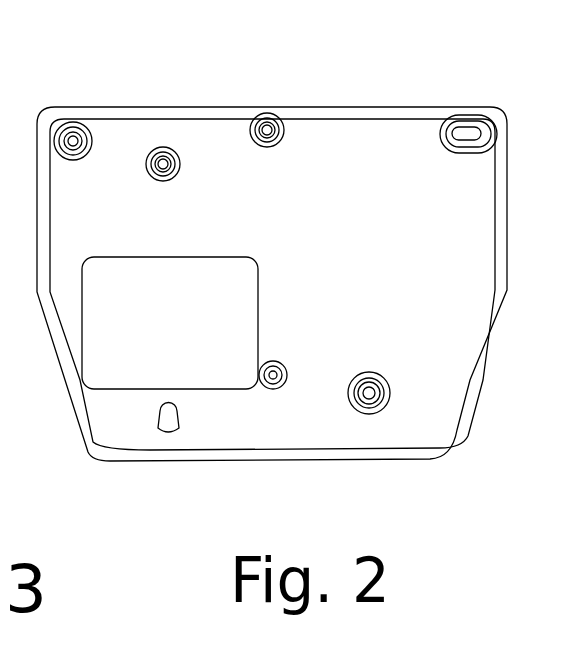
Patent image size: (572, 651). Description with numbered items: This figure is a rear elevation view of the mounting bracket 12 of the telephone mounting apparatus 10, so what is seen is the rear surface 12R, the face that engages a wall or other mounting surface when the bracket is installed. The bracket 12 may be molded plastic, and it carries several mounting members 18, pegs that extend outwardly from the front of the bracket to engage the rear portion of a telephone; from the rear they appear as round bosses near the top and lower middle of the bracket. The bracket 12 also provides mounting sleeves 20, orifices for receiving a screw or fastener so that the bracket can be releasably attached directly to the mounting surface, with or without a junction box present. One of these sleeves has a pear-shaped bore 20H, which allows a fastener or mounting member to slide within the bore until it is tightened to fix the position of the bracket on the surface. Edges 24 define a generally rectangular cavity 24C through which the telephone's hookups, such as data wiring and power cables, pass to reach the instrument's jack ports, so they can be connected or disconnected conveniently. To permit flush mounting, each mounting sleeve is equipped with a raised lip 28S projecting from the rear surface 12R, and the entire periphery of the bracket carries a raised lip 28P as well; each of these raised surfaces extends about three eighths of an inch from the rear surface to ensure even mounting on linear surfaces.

The telephone mounting apparatus 10 is at (344, 67).
The mounting bracket 12 is at (492, 355).
The rear surface 12R is at (378, 253).
The mounting member 18 is at (272, 113).
The mounting sleeve 20 is at (78, 123).
The bore 20H is at (167, 434).
The edges 24 is at (97, 258).
The cavity 24C is at (125, 352).
The raised lip of sleeve 28S is at (165, 147).
The peripheral raised lip 28P is at (505, 125).